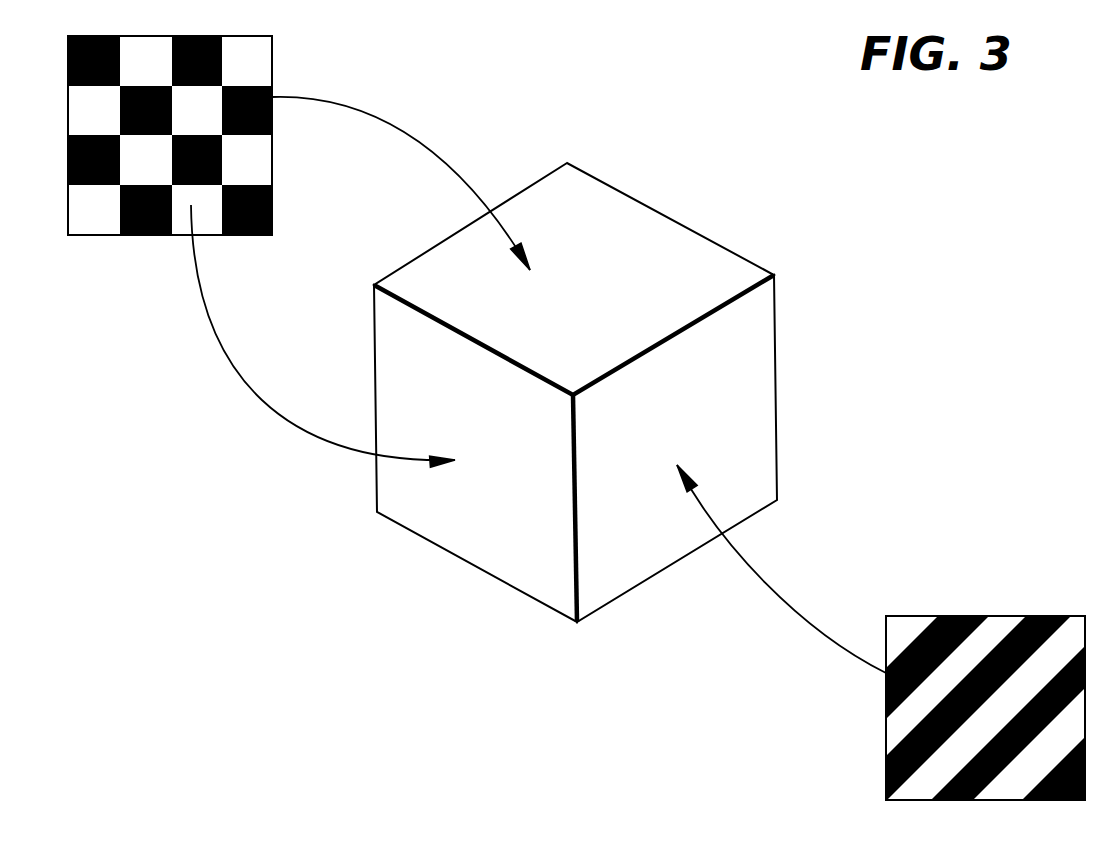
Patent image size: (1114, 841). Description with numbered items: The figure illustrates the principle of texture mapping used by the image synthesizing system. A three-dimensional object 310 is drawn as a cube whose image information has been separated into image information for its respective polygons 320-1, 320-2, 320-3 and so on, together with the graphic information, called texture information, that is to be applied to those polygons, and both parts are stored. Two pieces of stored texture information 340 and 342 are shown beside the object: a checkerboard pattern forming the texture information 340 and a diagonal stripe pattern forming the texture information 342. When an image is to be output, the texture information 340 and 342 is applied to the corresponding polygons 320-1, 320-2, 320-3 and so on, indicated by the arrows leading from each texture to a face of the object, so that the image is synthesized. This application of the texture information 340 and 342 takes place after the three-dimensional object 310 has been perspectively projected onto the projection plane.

The 3-D object 310 is at (615, 327).
The polygon 320-1 is at (442, 532).
The polygon 320-2 is at (745, 448).
The polygon 320-3 is at (638, 232).
The texture information 340 is at (272, 68).
The texture information 342 is at (978, 617).